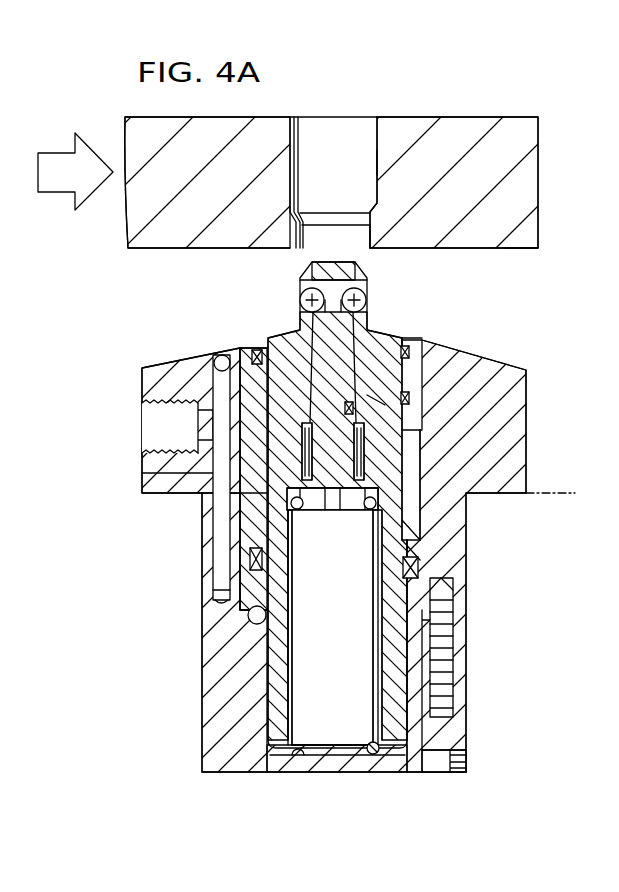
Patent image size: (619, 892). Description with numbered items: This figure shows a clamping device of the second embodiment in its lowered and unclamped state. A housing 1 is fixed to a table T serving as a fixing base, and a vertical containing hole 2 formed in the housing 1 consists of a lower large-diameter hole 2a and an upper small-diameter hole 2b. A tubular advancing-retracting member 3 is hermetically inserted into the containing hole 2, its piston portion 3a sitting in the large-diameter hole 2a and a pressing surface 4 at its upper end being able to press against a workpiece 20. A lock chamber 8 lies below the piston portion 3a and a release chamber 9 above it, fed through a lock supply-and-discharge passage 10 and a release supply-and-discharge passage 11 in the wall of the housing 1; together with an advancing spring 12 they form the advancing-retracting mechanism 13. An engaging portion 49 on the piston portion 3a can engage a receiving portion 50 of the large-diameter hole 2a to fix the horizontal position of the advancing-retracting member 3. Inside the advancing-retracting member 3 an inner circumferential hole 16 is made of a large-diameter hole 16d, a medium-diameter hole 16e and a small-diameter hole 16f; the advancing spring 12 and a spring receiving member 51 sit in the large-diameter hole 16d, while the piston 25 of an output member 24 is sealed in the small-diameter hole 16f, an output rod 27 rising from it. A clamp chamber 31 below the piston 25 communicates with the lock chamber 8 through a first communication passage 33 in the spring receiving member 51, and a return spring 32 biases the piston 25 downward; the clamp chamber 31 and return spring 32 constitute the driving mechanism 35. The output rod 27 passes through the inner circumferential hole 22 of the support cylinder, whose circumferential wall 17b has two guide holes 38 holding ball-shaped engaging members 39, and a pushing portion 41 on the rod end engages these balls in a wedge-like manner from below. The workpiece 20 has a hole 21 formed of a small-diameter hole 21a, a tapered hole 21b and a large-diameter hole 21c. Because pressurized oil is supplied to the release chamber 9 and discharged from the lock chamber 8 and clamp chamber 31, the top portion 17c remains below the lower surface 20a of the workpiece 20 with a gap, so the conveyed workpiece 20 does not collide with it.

The housing 1 is at (493, 349).
The containing hole 2 is at (252, 510).
The large-diameter hole 2a is at (262, 496).
The small-diameter hole 2b is at (214, 362).
The advancing-retracting member 3 is at (410, 518).
The piston portion 3a is at (418, 556).
The pressing surface 4 is at (390, 334).
The lock chamber 8 is at (328, 720).
The release chamber 9 is at (413, 487).
The lock supply-and-discharge passage 10 is at (222, 572).
The release supply-and-discharge passage 11 is at (196, 442).
The advancing spring 12 is at (378, 752).
The advancing-retracting mechanism 13 is at (345, 718).
The inner circumferential hole 16 is at (292, 348).
The large-diameter hole 16d is at (255, 600).
The medium-diameter hole 16e is at (142, 475).
The small-diameter hole 16f is at (248, 352).
The circumferential wall 17b is at (362, 280).
The top portion 17c is at (333, 268).
The workpiece 20 is at (357, 192).
The lower surface 20a is at (512, 250).
The hole 21 is at (345, 140).
The small-diameter hole 21a is at (366, 232).
The tapered hole 21b is at (374, 206).
The large-diameter hole 21c is at (372, 175).
The inner circumferential hole 22 is at (408, 338).
The output member 24 is at (410, 397).
The piston 25 is at (358, 402).
The output rod 27 is at (374, 376).
The clamp chamber 31 is at (343, 500).
The return spring 32 is at (402, 410).
The first communication passage 33 is at (330, 512).
The driving mechanism 35 is at (366, 456).
The guide holes 38 is at (300, 297).
The engaging members 39 is at (366, 302).
The pushing portion 41 is at (312, 322).
The engaging portion 49 is at (258, 522).
The receiving portion 50 is at (195, 410).
The spring receiving member 51 is at (299, 505).
The table T is at (550, 493).